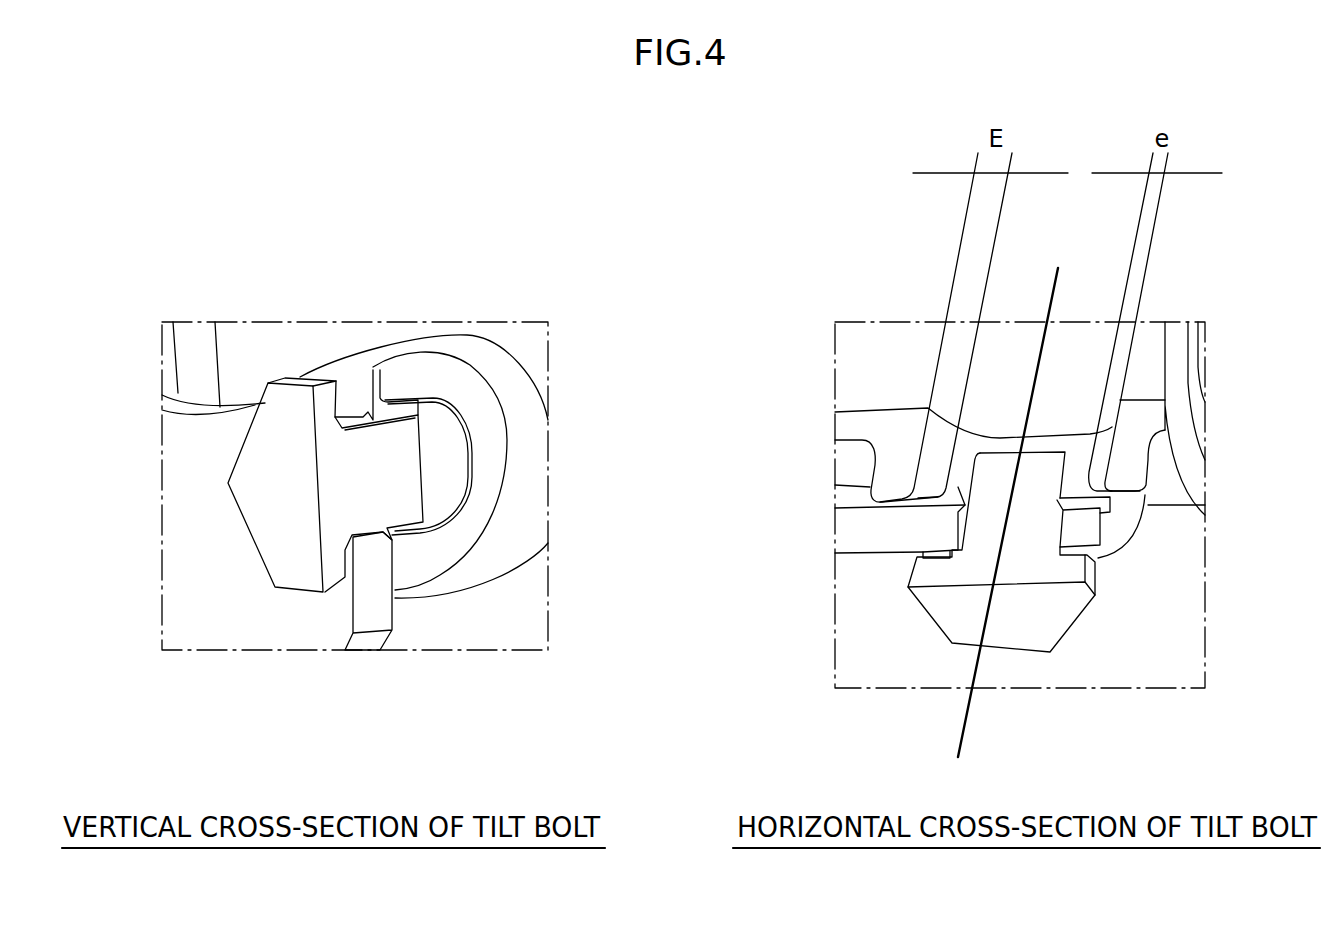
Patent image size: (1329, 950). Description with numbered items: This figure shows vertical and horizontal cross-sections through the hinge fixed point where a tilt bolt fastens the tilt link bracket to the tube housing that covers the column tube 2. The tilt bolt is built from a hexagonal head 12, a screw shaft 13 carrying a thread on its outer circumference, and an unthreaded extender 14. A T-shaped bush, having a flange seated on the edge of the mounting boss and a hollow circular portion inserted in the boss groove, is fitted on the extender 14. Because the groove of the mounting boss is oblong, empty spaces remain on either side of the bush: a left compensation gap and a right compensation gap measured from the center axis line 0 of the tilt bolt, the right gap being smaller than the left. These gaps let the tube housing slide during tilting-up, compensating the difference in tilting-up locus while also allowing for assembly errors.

The column tube 2 is at (1182, 457).
The hexagonal head 12 is at (285, 438).
The screw shaft 13 is at (360, 415).
The extender 14 is at (392, 448).
The center axis line 0 is at (1010, 513).